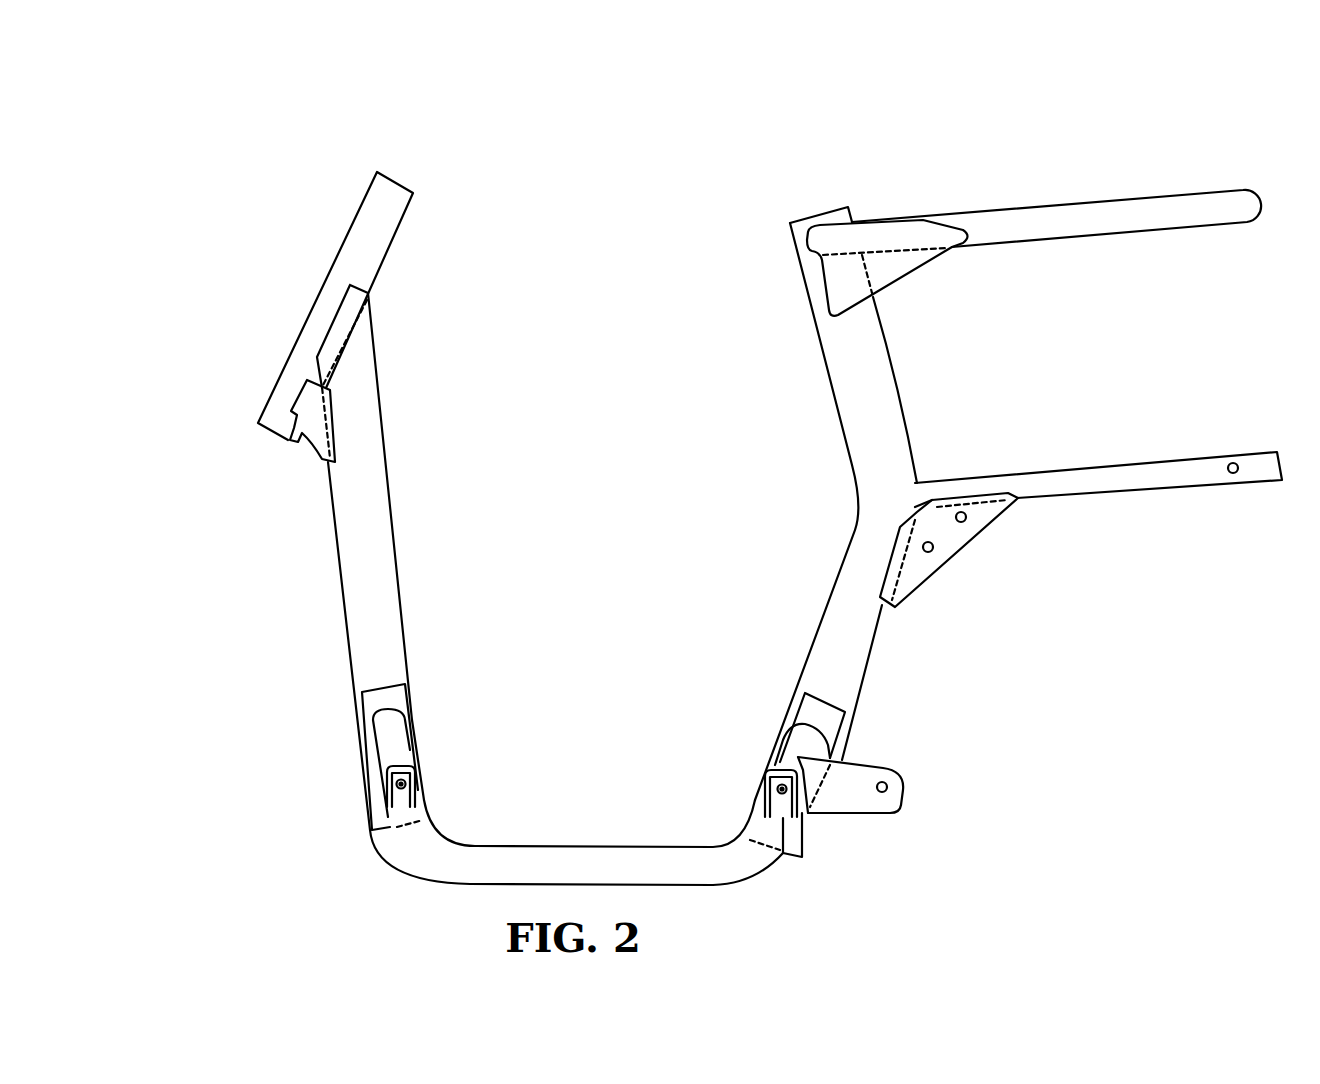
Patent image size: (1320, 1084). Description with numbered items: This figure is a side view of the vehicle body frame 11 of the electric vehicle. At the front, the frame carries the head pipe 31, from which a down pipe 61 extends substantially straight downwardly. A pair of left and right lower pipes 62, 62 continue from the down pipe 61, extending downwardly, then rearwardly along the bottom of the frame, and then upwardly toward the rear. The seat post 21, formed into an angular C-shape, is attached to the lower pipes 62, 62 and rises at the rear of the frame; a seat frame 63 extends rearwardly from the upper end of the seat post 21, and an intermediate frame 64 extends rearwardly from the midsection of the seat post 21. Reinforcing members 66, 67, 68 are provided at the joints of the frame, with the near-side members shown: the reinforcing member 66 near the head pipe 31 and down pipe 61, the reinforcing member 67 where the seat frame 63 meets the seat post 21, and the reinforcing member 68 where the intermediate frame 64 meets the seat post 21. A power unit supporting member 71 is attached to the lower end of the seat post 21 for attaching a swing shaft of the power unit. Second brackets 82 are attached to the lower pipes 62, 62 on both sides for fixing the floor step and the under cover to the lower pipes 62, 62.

The vehicle body frame 11 is at (218, 188).
The head pipe 31 is at (357, 217).
The seat post 21 is at (831, 383).
The down pipe 61 is at (397, 533).
The lower pipes 62 is at (583, 842).
The seat frame 63 is at (1068, 202).
The intermediate frame 64 is at (1103, 462).
The reinforcing member 66 is at (305, 442).
The reinforcing member 67 is at (908, 277).
The reinforcing member 68 is at (957, 558).
The power unit supporting member 71 is at (853, 813).
The second brackets 82 is at (412, 747).